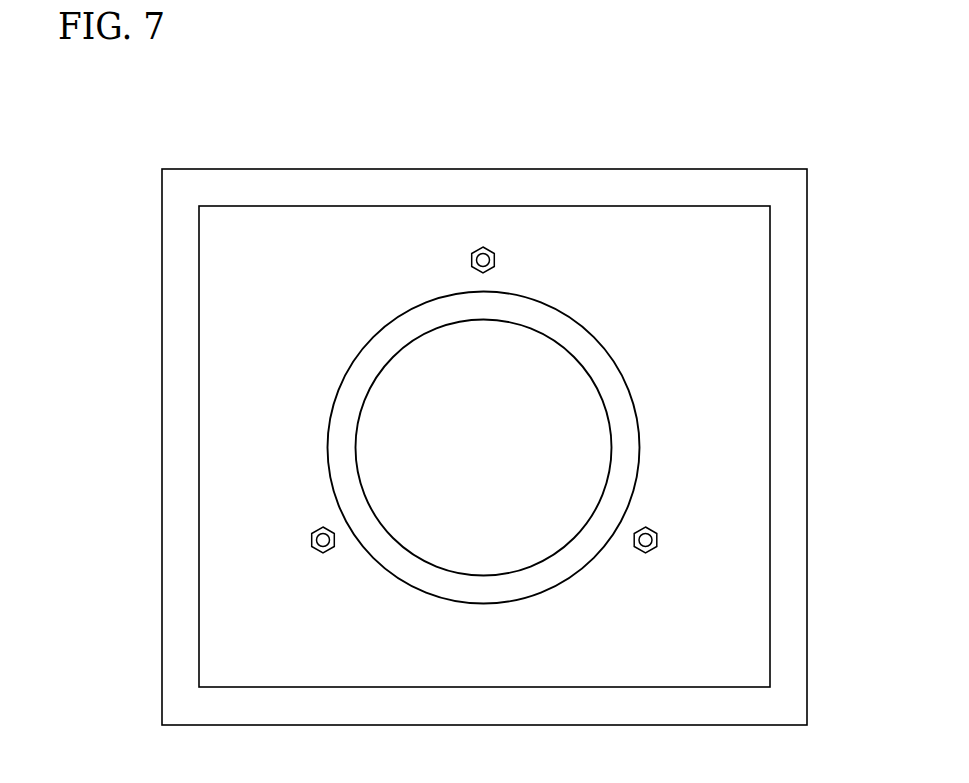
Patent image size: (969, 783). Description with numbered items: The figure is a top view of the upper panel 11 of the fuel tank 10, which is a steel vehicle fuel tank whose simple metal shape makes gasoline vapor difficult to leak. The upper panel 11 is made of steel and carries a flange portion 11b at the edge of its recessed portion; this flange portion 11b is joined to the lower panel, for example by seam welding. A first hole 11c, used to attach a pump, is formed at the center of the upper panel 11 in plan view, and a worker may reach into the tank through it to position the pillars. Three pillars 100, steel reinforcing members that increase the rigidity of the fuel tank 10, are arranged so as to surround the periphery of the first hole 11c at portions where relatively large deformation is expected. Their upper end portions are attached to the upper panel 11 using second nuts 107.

The fuel tank 10 is at (100, 160).
The upper panel 11 is at (222, 347).
The flange portion 11b is at (797, 432).
The first hole 11c is at (558, 343).
The pillar 100 is at (490, 248).
The second nut 107 is at (497, 258).